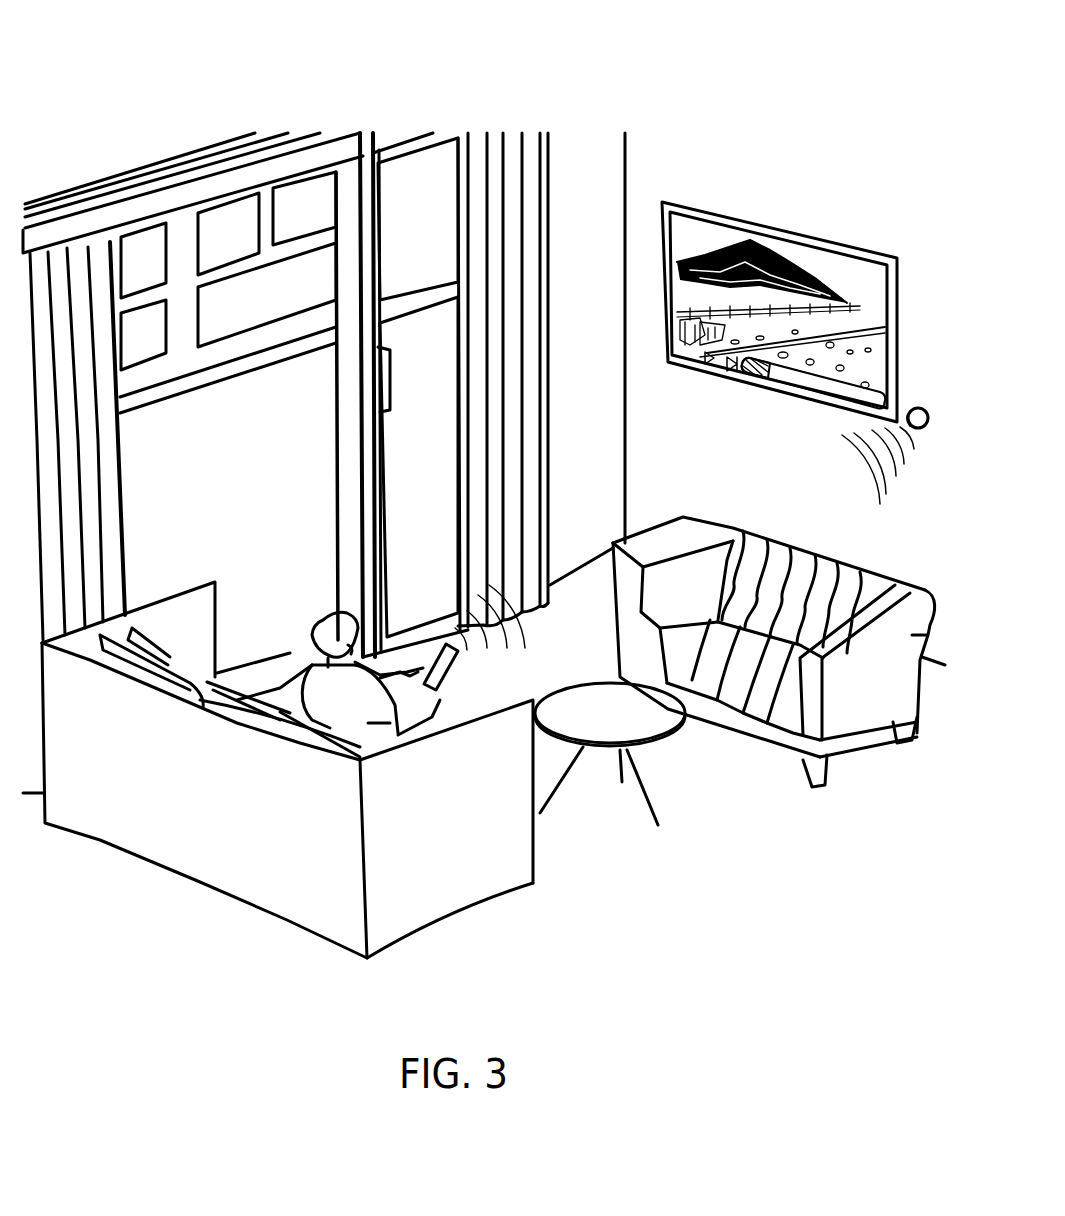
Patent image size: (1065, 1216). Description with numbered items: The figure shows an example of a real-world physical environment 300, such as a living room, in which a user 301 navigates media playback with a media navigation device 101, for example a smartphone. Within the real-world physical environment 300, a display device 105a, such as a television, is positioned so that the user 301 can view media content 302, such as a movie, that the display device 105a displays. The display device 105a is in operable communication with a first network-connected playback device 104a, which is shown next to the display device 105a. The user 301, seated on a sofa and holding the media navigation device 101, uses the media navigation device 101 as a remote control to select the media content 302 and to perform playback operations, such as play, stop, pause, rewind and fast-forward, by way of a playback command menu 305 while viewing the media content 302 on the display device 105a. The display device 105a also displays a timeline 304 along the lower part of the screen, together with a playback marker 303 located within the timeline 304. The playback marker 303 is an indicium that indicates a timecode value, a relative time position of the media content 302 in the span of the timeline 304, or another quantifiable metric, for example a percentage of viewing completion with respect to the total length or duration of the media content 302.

The real-world physical environment 300 is at (183, 91).
The display device 105a is at (757, 222).
The media content 302 is at (825, 277).
The playback marker 303 is at (758, 385).
The timeline 304 is at (818, 390).
The playback command menu 305 is at (715, 370).
The first network-connected playback device 104a is at (915, 432).
The user 301 is at (322, 615).
The media navigation device 101 is at (427, 646).